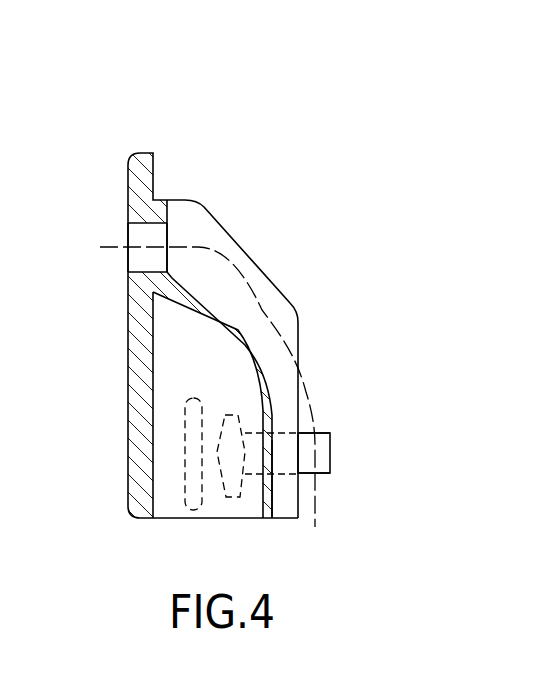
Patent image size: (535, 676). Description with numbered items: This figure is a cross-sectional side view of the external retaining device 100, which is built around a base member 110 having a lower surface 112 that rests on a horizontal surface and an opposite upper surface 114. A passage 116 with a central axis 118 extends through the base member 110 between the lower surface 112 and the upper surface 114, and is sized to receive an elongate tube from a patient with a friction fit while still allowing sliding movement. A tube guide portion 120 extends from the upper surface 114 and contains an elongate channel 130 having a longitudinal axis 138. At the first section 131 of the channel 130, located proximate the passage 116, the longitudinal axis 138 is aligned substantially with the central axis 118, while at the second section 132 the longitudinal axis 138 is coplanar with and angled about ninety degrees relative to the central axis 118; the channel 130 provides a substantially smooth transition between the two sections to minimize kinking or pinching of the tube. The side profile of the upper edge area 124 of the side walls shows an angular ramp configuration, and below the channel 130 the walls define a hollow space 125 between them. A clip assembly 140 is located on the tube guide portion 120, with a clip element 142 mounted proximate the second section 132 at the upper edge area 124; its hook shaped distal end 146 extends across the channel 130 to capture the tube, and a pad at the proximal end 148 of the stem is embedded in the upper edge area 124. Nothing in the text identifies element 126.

The external retaining device 100 is at (317, 157).
The base member 110 is at (137, 147).
The lower surface 112 is at (128, 185).
The upper surface 114 is at (157, 167).
The passage 116 is at (130, 233).
The central axis 118 is at (100, 247).
The tube guide portion 120 is at (275, 281).
The upper edge area 124 is at (298, 353).
The hollow space / finger grip 125 is at (183, 458).
The cavity 126 is at (180, 363).
The elongate channel 130 is at (250, 324).
The first section 131 is at (183, 231).
The second section 132 is at (278, 506).
The longitudinal axis 138 is at (238, 276).
The clip assembly 140 is at (342, 446).
The clip element 142 is at (310, 475).
The hook shaped distal end 146 is at (323, 434).
The proximal end 148 is at (229, 485).